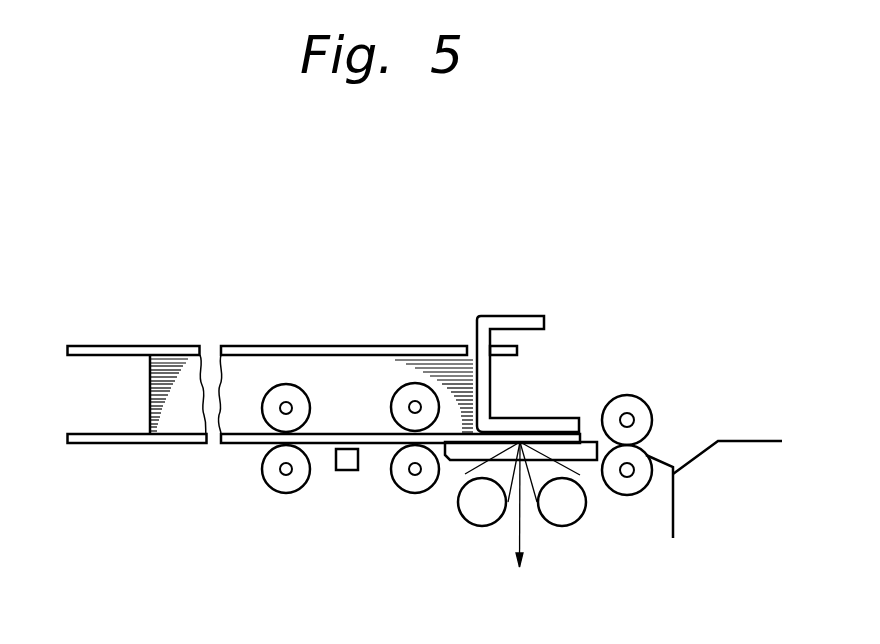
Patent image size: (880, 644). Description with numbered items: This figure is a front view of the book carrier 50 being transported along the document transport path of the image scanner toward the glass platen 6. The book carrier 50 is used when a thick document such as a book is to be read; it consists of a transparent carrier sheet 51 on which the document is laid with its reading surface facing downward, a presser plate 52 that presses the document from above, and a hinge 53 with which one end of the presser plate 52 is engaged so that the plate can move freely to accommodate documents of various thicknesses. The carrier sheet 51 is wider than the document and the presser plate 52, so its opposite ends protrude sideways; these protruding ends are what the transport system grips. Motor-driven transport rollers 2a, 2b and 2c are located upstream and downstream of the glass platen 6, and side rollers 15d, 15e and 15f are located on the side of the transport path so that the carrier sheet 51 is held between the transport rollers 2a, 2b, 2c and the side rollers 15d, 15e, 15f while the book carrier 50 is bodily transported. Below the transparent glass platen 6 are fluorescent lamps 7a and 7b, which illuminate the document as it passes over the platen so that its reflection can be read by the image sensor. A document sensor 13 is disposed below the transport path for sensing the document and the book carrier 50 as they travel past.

The book carrier 50 is at (258, 344).
The carrier sheet 51 is at (110, 446).
The presser plate 52 is at (103, 345).
The hinge 53 is at (529, 419).
The glass platen 6 is at (567, 448).
The document sensor 13 is at (347, 471).
The side roller 15d is at (296, 387).
The side roller 15e is at (415, 383).
The side roller 15f is at (649, 405).
The transport roller 2a is at (288, 484).
The transport roller 2b is at (415, 484).
The transport roller 2c is at (629, 496).
The fluorescent lamp 7a is at (480, 527).
The fluorescent lamp 7b is at (567, 527).